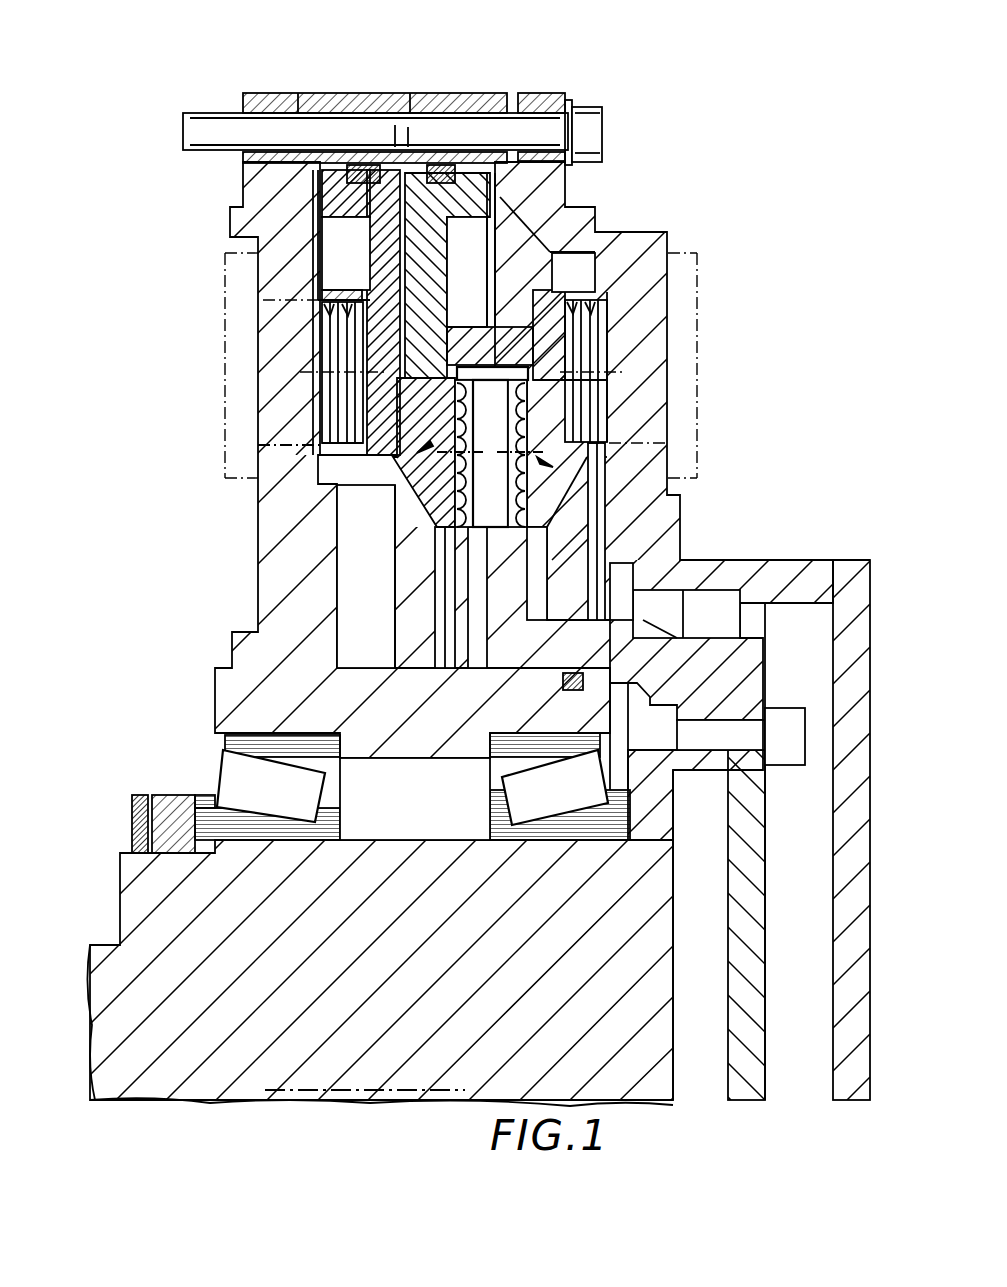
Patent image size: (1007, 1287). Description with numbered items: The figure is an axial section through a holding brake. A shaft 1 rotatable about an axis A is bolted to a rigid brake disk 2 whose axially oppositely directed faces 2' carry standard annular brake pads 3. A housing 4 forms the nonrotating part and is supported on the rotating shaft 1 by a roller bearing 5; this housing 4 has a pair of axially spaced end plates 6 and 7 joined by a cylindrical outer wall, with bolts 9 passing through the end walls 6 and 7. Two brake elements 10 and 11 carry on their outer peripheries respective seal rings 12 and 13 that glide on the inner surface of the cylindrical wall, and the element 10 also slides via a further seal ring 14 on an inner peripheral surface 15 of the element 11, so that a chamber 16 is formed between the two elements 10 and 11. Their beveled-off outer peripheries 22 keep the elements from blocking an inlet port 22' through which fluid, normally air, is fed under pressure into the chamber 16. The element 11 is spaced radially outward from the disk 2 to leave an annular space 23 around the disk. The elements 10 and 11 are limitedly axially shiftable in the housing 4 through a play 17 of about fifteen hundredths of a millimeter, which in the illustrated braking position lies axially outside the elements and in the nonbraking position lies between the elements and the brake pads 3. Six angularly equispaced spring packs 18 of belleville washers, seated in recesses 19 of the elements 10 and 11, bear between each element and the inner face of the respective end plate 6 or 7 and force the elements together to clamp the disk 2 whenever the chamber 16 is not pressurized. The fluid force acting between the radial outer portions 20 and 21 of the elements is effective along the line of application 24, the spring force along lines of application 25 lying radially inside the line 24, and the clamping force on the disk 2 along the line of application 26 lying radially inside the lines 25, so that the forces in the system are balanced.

The shaft 1 is at (140, 903).
The brake disk 2 is at (426, 576).
The faces of the brake disk 2' is at (646, 531).
The brake pads 3 is at (517, 503).
The housing 4 is at (205, 357).
The roller bearing 5 is at (300, 793).
The end plate 6 is at (272, 538).
The end plate 7 is at (655, 452).
The bolts 9 is at (595, 128).
The brake element 10 is at (397, 473).
The brake element 11 is at (512, 478).
The seal ring 12 is at (357, 177).
The seal ring 13 is at (443, 173).
The seal ring 14 is at (500, 375).
The inner peripheral surface 15 is at (430, 370).
The chamber 16 is at (400, 237).
The play 17 is at (322, 453).
The spring packs 18 is at (340, 350).
The recesses 19 is at (330, 432).
The radial outer portion 20 is at (375, 207).
The radial outer portion 21 is at (490, 177).
The beveled-off outer peripheries 22 is at (399, 109).
The inlet port 22' is at (386, 87).
The annular space 23 is at (585, 245).
The line of application 24 is at (350, 262).
The lines of application 25 is at (617, 363).
The line of application 26 is at (468, 484).
The axis A is at (372, 1092).